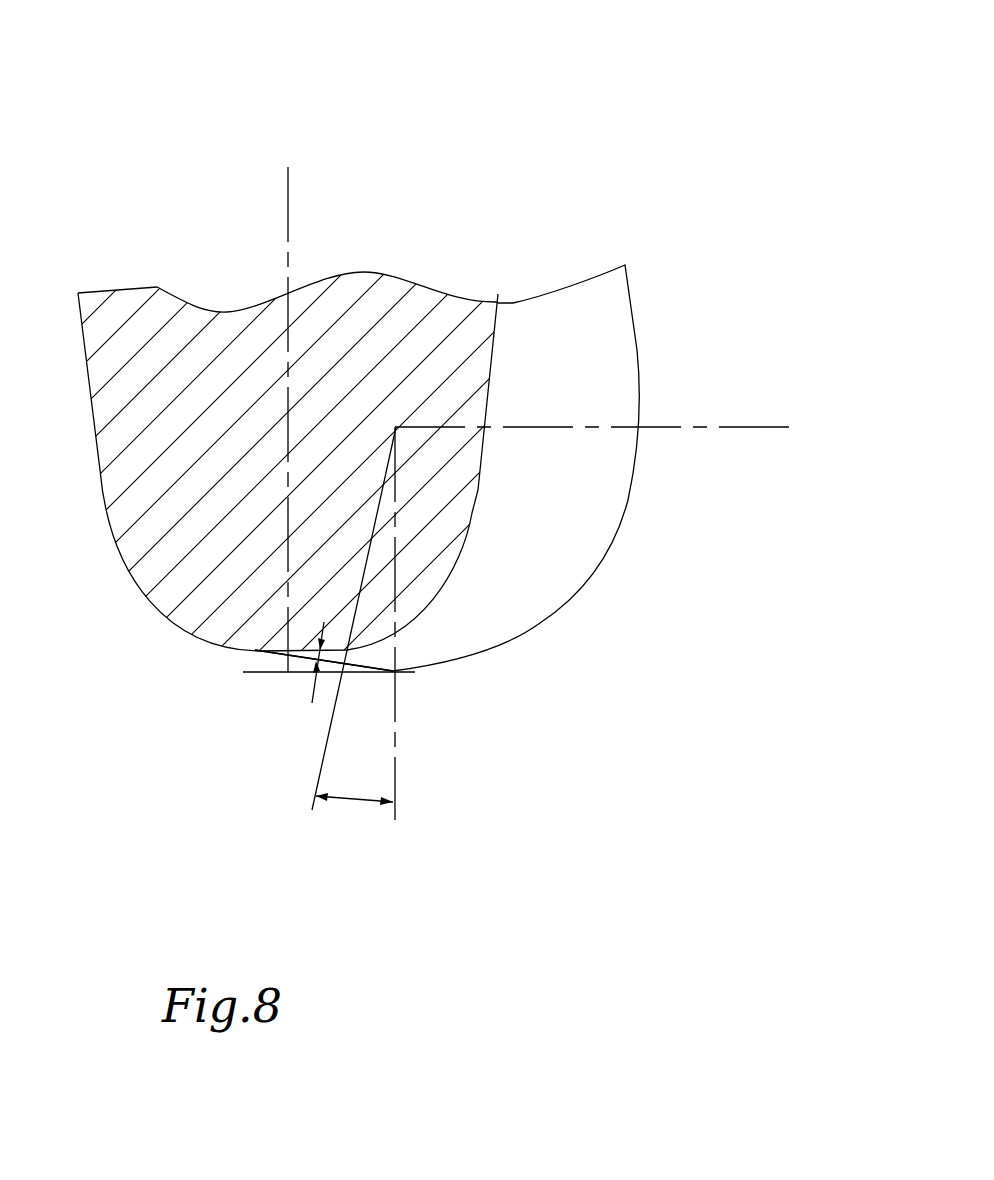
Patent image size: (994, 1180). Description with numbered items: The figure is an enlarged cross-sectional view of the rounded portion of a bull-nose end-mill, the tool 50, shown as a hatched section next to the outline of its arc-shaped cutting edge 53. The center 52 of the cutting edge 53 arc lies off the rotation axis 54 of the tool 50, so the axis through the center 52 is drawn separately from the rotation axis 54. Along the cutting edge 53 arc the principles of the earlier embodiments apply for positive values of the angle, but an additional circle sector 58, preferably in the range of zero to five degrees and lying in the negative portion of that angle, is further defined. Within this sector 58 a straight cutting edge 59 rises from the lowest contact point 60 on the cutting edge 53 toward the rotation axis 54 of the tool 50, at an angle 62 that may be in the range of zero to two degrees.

The bull-nose end-mill 50 is at (414, 354).
The center of the cutting edge arc 52 is at (395, 427).
The cutting edge 53 is at (570, 600).
The rotation axis 54 is at (287, 232).
The additional circle sector 58 is at (352, 803).
The straight cutting edge 59 is at (363, 668).
The lowest contact point 60 is at (395, 673).
The angle 62 is at (310, 662).